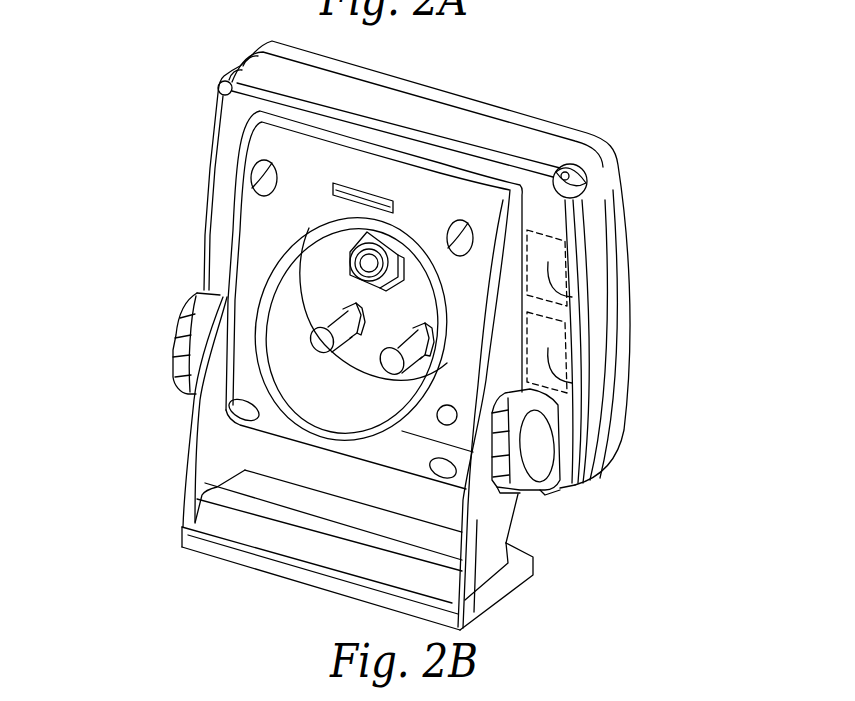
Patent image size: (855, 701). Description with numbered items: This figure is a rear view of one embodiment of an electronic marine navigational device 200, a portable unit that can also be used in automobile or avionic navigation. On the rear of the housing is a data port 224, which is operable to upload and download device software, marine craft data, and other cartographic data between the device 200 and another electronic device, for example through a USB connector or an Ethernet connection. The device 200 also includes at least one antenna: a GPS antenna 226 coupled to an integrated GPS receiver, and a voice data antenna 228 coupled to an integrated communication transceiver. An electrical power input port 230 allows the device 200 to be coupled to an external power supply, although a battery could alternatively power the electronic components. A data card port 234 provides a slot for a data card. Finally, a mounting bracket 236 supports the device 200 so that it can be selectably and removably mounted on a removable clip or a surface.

The electronic marine navigational device 200 is at (136, 43).
The data port 224 is at (366, 265).
The GPS antenna 226 is at (545, 384).
The voice data antenna 228 is at (547, 298).
The electrical power input port 230 is at (440, 418).
The data card port 234 is at (362, 196).
The mounting bracket 236 is at (250, 561).